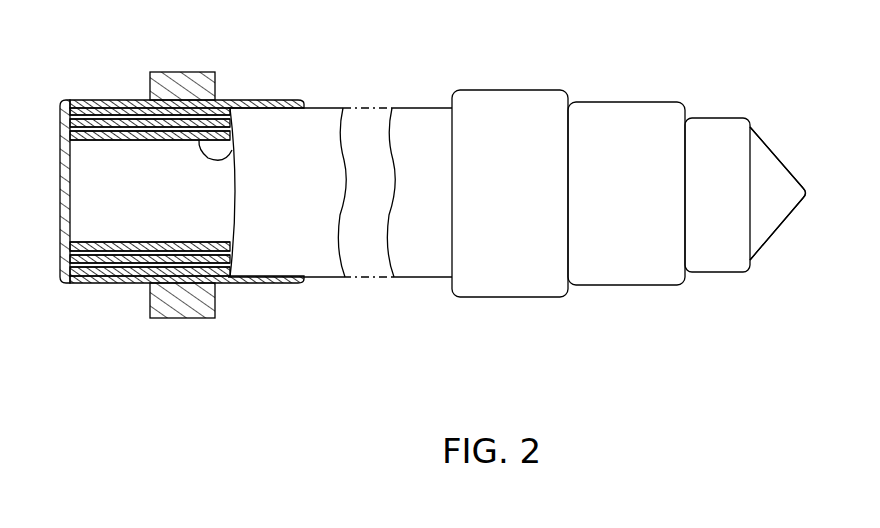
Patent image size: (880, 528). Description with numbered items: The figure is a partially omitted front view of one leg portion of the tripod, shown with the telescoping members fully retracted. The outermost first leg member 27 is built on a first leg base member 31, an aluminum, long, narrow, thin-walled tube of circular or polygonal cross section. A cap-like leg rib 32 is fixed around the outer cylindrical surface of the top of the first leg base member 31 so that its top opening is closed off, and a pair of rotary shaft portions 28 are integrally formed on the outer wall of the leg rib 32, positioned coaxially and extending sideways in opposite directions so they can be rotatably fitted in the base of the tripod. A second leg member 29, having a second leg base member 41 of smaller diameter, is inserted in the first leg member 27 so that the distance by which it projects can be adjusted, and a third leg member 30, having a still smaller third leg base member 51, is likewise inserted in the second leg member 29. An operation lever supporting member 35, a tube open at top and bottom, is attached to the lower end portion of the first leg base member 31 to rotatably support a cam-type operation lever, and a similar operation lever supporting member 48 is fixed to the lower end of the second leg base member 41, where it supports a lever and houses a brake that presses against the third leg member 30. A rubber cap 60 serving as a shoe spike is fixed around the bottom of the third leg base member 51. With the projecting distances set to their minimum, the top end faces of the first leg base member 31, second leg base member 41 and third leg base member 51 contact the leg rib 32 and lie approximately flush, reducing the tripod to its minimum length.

The first leg member 27 is at (397, 101).
The rotary shaft portion 28 is at (158, 84).
The second leg member 29 is at (665, 92).
The third leg member 30 is at (733, 105).
The first leg base member 31 is at (86, 103).
The leg rib 32 is at (223, 100).
The operation lever supporting member 35 is at (545, 71).
The second leg base member 41 is at (127, 122).
The operation lever supporting member 48 is at (651, 70).
The third leg base member 51 is at (232, 150).
The rubber cap 60 is at (762, 157).